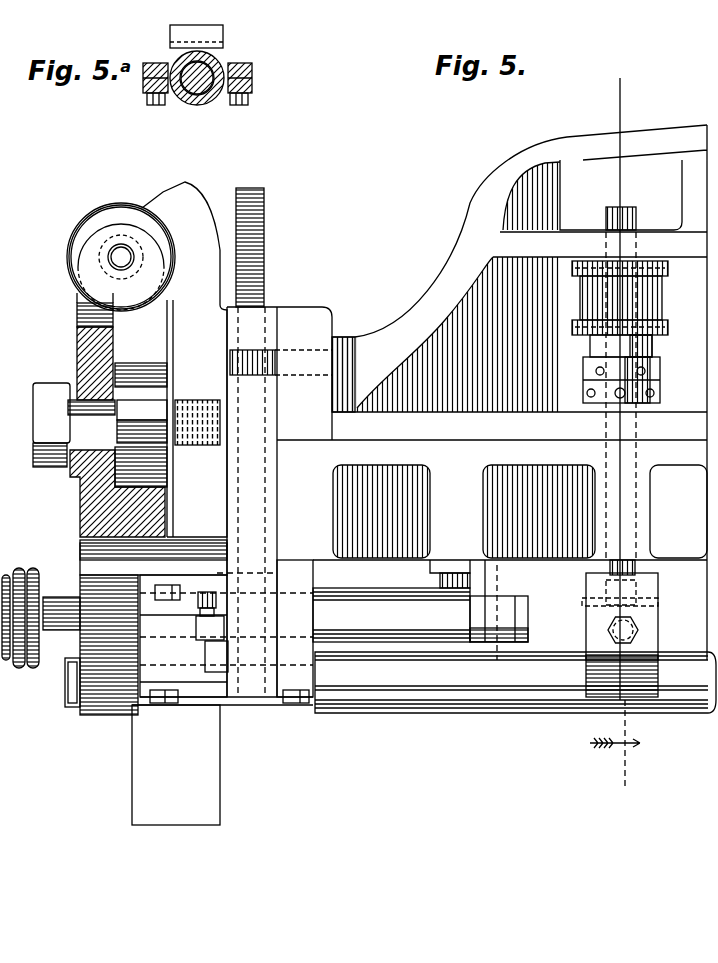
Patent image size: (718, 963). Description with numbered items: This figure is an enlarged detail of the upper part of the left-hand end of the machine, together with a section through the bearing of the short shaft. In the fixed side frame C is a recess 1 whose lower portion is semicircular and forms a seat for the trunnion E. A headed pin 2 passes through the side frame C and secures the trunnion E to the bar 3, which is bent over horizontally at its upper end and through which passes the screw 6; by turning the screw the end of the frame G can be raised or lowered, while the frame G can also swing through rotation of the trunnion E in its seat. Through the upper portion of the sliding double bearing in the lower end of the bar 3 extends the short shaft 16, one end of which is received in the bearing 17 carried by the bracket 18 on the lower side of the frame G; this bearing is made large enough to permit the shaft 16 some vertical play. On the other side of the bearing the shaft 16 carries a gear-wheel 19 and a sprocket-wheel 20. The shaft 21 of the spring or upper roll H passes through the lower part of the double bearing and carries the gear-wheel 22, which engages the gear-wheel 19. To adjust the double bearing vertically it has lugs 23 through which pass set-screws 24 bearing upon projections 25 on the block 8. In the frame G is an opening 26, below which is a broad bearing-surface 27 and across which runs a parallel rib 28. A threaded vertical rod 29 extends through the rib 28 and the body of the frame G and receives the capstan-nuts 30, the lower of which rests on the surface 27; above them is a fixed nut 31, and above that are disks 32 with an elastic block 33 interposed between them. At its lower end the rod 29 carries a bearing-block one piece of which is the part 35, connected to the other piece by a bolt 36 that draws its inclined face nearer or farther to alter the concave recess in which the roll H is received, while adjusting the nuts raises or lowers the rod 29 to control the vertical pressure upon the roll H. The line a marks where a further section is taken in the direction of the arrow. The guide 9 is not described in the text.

In FIG. 5, the recess 1 is at (121, 274).
In FIG. 5, the headed pin 2 is at (51, 425).
In FIG. 5, the bar 3 is at (184, 359).
In FIG. 5, the screw 6 is at (259, 247).
In FIG. 5, the block 8 is at (252, 502).
In FIG. 5, the guide box 9 is at (279, 373).
In FIG. 5A, the short shaft 16 is at (181, 106).
In FIG. 5, the short shaft 16 is at (402, 628).
In FIG. 5A, the bearing 17 is at (203, 107).
In FIG. 5, the bearing 17 is at (500, 590).
In FIG. 5, the bracket 18 is at (432, 576).
In FIG. 5, the gear-wheel 19 is at (130, 632).
In FIG. 5, the sprocket-wheel 20 is at (41, 605).
In FIG. 5, the shaft of roll H 21 is at (60, 696).
In FIG. 5, the gear-wheel 22 is at (108, 718).
In FIG. 5, the lugs 23 is at (196, 630).
In FIG. 5, the set-screws 24 is at (207, 592).
In FIG. 5, the projections 25 is at (205, 659).
In FIG. 5, the opening 26 is at (621, 195).
In FIG. 5, the bearing-surface 27 is at (679, 423).
In FIG. 5, the rib 28 is at (600, 244).
In FIG. 5, the vertical rod 29 is at (610, 207).
In FIG. 5, the capstan-nuts 30 is at (655, 377).
In FIG. 5, the fixed nut 31 is at (652, 352).
In FIG. 5, the disks 32 is at (668, 330).
In FIG. 5, the elastic block 33 is at (662, 299).
In FIG. 5, the bearing-block part 35 is at (648, 626).
In FIG. 5, the bolt 36 is at (608, 632).
In FIG. 5, the fixed side frame C is at (111, 493).
In FIG. 5, the trunnion E is at (117, 390).
In FIG. 5, the frame G is at (492, 392).
In FIG. 5, the spring or upper roll H is at (515, 682).
In FIG. 5, the section line a is at (617, 422).